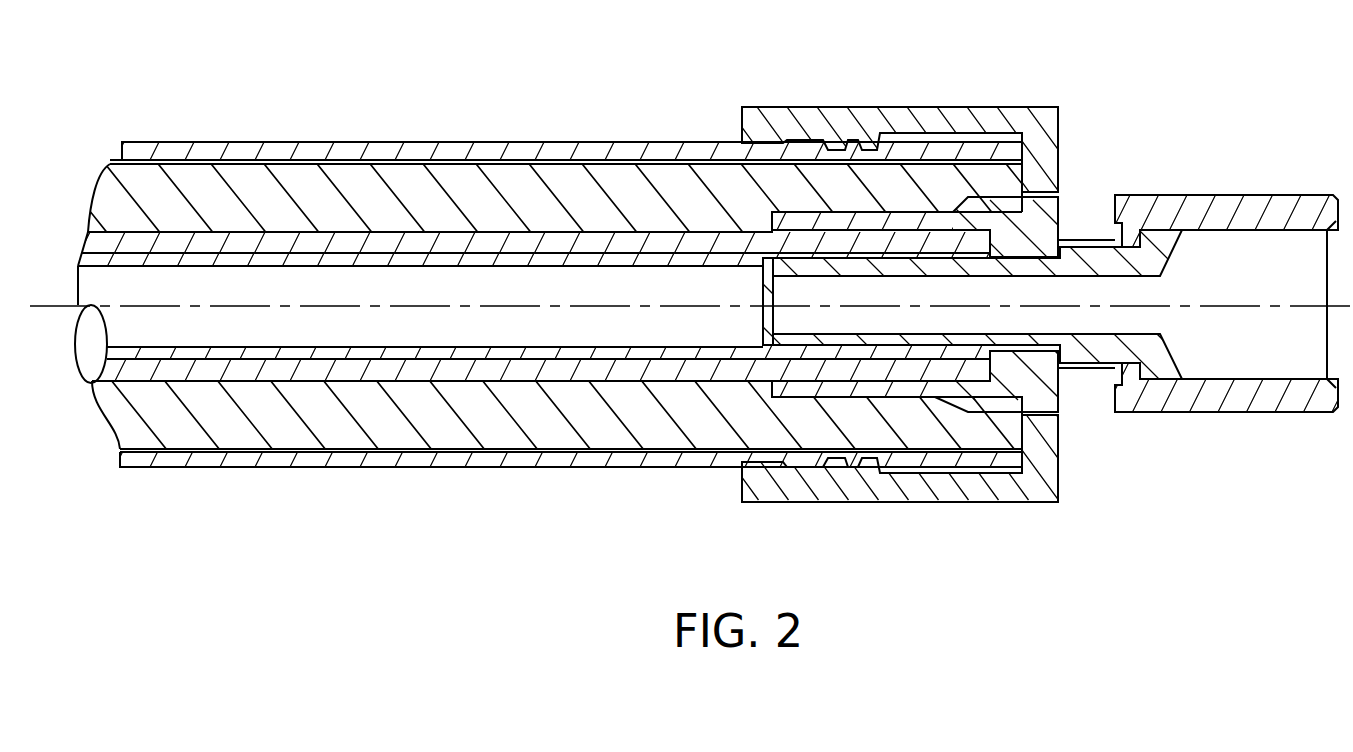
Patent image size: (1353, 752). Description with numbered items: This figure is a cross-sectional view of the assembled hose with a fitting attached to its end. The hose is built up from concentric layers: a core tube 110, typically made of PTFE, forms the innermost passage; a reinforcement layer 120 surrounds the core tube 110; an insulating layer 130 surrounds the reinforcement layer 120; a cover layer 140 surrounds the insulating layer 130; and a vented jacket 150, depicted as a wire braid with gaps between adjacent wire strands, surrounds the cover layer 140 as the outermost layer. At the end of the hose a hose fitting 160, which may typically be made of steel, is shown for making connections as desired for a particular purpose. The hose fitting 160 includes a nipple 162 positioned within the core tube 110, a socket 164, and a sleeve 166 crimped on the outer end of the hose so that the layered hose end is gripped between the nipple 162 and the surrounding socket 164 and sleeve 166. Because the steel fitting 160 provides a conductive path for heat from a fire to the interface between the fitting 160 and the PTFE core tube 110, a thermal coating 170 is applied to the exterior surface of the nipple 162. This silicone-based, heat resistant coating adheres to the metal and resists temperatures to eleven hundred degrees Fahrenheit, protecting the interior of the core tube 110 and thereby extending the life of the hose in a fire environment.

The core tube 110 is at (120, 262).
The reinforcement layer 120 is at (240, 247).
The insulating layer 130 is at (330, 197).
The cover layer 140 is at (456, 160).
The vented jacket 150 is at (581, 148).
The hose fitting 160 is at (1251, 195).
The nipple 162 is at (1083, 347).
The socket 164 is at (1040, 215).
The sleeve 166 is at (961, 107).
The thermal coating 170 is at (1086, 238).